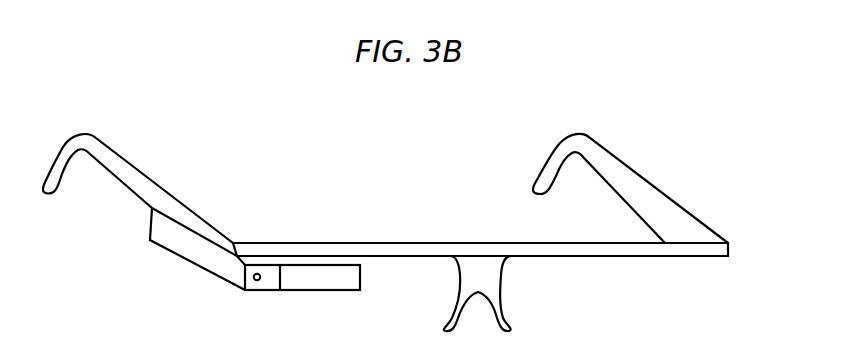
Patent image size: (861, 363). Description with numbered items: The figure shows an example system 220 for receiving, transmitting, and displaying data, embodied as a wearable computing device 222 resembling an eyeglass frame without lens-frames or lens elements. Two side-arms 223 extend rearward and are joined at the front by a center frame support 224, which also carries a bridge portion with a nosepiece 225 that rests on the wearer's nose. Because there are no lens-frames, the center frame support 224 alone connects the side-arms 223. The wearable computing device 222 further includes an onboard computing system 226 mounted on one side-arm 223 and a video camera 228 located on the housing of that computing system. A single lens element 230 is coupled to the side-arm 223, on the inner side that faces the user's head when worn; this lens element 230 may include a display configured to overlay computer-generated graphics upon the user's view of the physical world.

The system 220 is at (712, 194).
The wearable computing device 222 is at (712, 288).
The side-arms 223 is at (127, 183).
The center frame support 224 is at (396, 248).
The nosepiece 225 is at (497, 296).
The onboard computing system 226 is at (175, 253).
The video camera 228 is at (257, 281).
The single lens element 230 is at (335, 291).